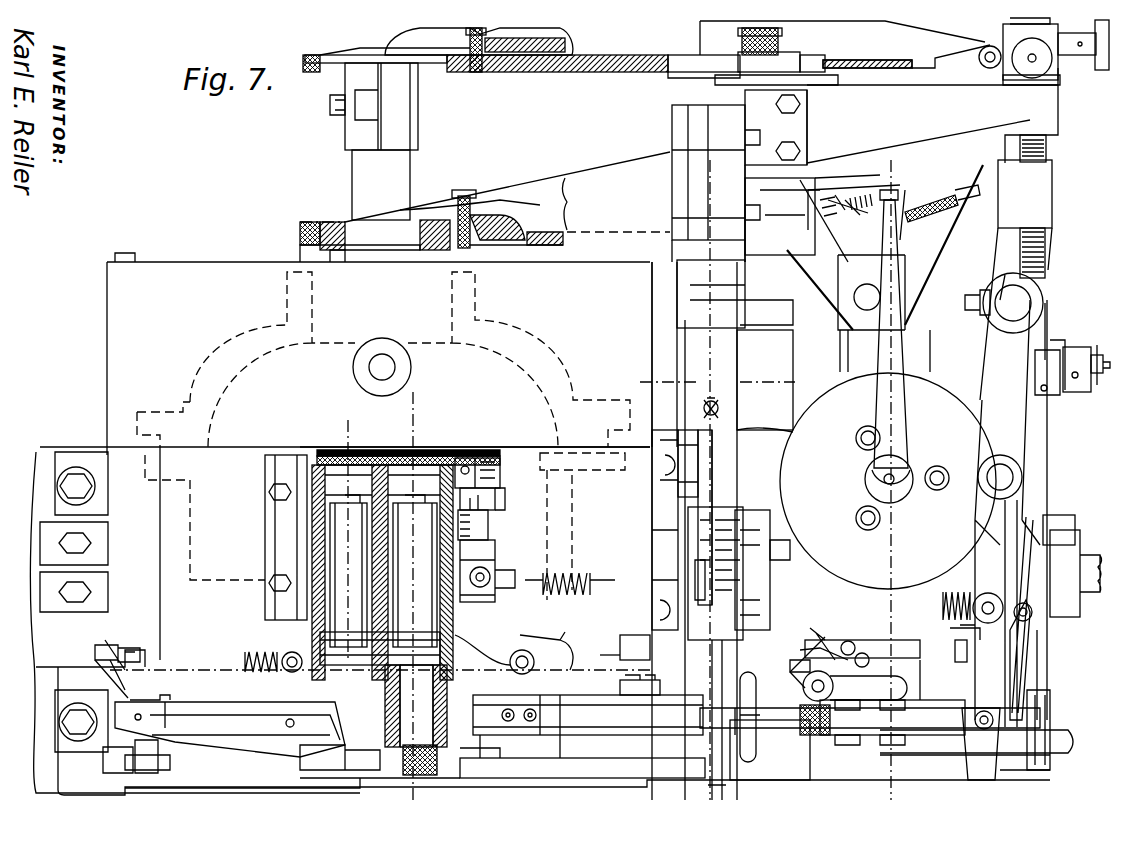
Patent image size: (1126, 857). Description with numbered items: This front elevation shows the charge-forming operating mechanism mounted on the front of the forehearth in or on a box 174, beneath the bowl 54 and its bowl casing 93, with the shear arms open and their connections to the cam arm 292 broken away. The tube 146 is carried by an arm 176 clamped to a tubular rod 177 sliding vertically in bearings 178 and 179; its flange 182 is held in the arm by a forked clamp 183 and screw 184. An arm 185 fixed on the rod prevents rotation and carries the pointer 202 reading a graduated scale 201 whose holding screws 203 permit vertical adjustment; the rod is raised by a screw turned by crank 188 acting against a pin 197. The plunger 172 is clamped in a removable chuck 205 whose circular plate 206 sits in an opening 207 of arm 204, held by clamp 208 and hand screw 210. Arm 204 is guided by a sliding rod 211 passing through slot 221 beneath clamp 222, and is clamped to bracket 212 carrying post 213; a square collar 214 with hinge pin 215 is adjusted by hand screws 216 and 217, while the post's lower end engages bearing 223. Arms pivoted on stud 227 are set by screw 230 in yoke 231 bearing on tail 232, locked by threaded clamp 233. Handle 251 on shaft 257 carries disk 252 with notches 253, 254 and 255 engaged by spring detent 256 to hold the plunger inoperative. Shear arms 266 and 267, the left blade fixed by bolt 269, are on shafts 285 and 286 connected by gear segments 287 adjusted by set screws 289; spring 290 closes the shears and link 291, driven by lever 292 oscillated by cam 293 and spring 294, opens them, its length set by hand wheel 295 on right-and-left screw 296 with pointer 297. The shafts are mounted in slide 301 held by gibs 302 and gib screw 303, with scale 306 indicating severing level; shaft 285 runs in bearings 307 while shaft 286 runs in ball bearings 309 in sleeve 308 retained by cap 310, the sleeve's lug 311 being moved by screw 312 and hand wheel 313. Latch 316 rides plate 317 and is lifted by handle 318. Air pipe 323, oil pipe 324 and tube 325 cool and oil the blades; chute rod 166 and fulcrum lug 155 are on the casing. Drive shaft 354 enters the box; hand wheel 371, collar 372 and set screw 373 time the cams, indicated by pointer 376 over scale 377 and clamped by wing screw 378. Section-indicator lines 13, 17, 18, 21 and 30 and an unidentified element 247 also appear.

The section line 13 is at (761, 373).
The section line 17 is at (902, 772).
The section line 18 is at (699, 779).
The section line 21 is at (425, 757).
The section line 30 is at (600, 652).
The bowl 54 is at (190, 537).
The bowl casing 93 is at (120, 435).
The tube 146 is at (320, 222).
The apertured lug 155 is at (513, 655).
The rod 166 is at (108, 760).
The plunger 172 is at (405, 172).
The box 174 is at (1046, 768).
The arm 176 is at (574, 178).
The tubular rod 177 is at (682, 255).
The bearing 178 is at (685, 302).
The bearing 179 is at (662, 575).
The flange 182 is at (300, 232).
The forked clamp 183 is at (502, 210).
The screw 184 is at (462, 195).
The arm 185 is at (672, 483).
The crank 188 is at (712, 764).
The pin 197 is at (705, 408).
The graduated scale 201 is at (725, 600).
The pointer 202 is at (745, 563).
The holding screws 203 is at (693, 506).
The arm 204 is at (632, 72).
The removable chuck 205 is at (420, 128).
The circular plate 206 is at (303, 62).
The opening 207 is at (352, 52).
The clamp 208 is at (568, 45).
The hand screw 210 is at (478, 72).
The sliding rod 211 is at (790, 60).
The bracket 212 is at (1052, 128).
The post 213 is at (1048, 150).
The square collar 214 is at (1050, 90).
The hinge pin 215 is at (982, 65).
The hand screw 216 is at (1022, 72).
The hand screw 217 is at (1100, 70).
The slot 221 is at (690, 72).
The clamp 222 is at (740, 44).
The bearing 223 is at (1052, 172).
The stud 227 is at (852, 305).
The screw 230 is at (955, 200).
The yoke 231 is at (868, 205).
The tail 232 is at (838, 212).
The threaded clamp 233 is at (903, 228).
The bracket 247 is at (1070, 338).
The handle 251 is at (912, 690).
The disk 252 is at (795, 670).
The notch 253 is at (795, 686).
The notch 254 is at (800, 652).
The notch 255 is at (845, 668).
The spring detent 256 is at (820, 630).
The shaft 257 is at (810, 690).
The shear arm 266 is at (212, 705).
The shear arm 267 is at (555, 740).
The bolt 269 is at (150, 700).
The shaft 285 is at (330, 632).
The shaft 286 is at (445, 625).
The gear segments 287 is at (330, 740).
The set screws 289 is at (286, 722).
The spring 290 is at (250, 655).
The link 291 is at (588, 715).
The shear cam lever 292 is at (1030, 448).
The cam 293 is at (830, 560).
The spring 294 is at (935, 610).
The hand wheel 295 is at (758, 745).
The right and left screw 296 is at (812, 740).
The pointer 297 is at (860, 765).
The slide 301 is at (320, 548).
The gibs 302 is at (505, 625).
The gib screw 303 is at (490, 572).
The scale 306 is at (488, 528).
The anti-friction bearings 307 is at (325, 660).
The sleeve 308 is at (445, 560).
The ball bearings 309 is at (492, 622).
The cap 310 is at (432, 450).
The projecting lug 311 is at (500, 450).
The screw 312 is at (495, 462).
The hand wheel 313 is at (495, 506).
The latch 316 is at (1032, 642).
The plate 317 is at (955, 638).
The depending handle 318 is at (1022, 685).
The pipe 323 is at (118, 645).
The pipe 324 is at (112, 672).
The tube 325 is at (628, 636).
The shaft 354 is at (1092, 588).
The hand wheel 371 is at (1040, 335).
The fixed collar 372 is at (1082, 392).
The set screw 373 is at (1097, 345).
The pointer 376 is at (905, 428).
The scale 377 is at (818, 242).
The wing screw 378 is at (868, 485).